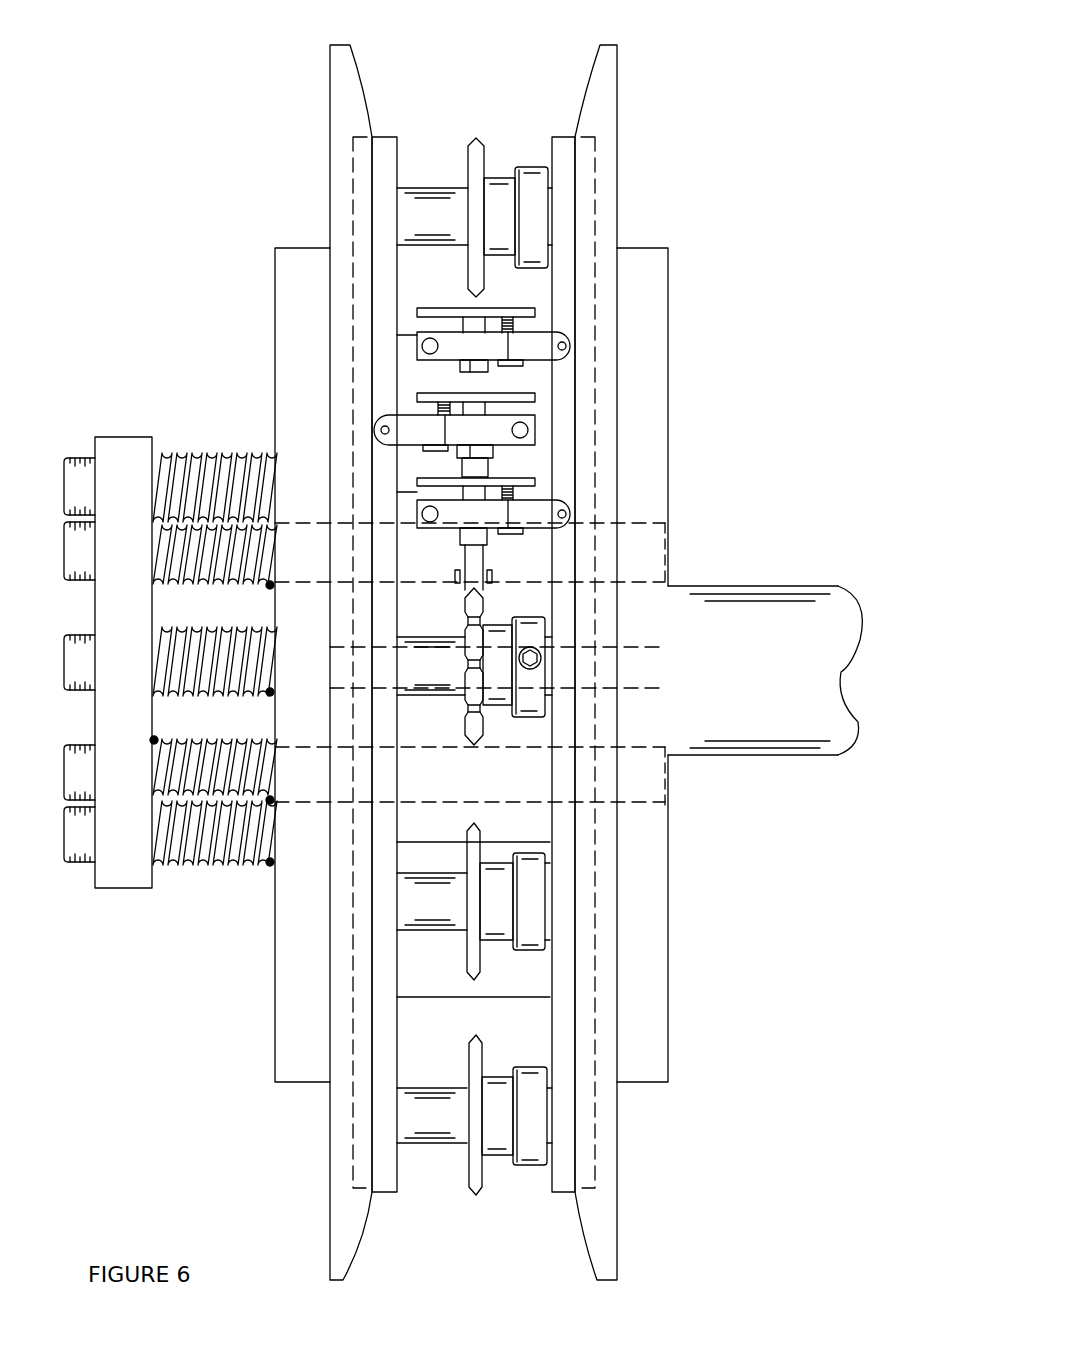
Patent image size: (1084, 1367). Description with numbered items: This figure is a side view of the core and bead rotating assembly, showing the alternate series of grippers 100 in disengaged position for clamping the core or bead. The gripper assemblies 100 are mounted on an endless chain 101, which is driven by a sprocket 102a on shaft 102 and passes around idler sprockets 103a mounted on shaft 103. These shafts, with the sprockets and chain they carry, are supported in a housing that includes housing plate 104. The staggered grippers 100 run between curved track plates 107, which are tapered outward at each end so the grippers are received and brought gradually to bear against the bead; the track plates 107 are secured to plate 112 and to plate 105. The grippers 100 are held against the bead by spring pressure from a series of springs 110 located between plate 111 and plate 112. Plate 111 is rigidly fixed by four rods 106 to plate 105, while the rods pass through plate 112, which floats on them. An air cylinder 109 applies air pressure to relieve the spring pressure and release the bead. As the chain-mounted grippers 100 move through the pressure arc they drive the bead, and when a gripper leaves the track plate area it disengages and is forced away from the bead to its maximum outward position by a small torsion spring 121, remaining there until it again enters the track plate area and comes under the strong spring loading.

The gripper assemblies 100 is at (539, 430).
The endless chain 101 is at (496, 558).
The shaft 102 is at (427, 931).
The sprocket 102a is at (489, 893).
The shaft 103 is at (425, 213).
The idler sprockets 103a is at (466, 158).
The housing plate 104 is at (544, 134).
The plate 105 is at (670, 277).
The rods 106 is at (65, 744).
The track plates 107 is at (327, 82).
The air cylinder 109 is at (763, 759).
The springs 110 is at (215, 875).
The plate 111 is at (123, 893).
The plate 112 is at (273, 270).
The torsion spring 121 is at (525, 322).